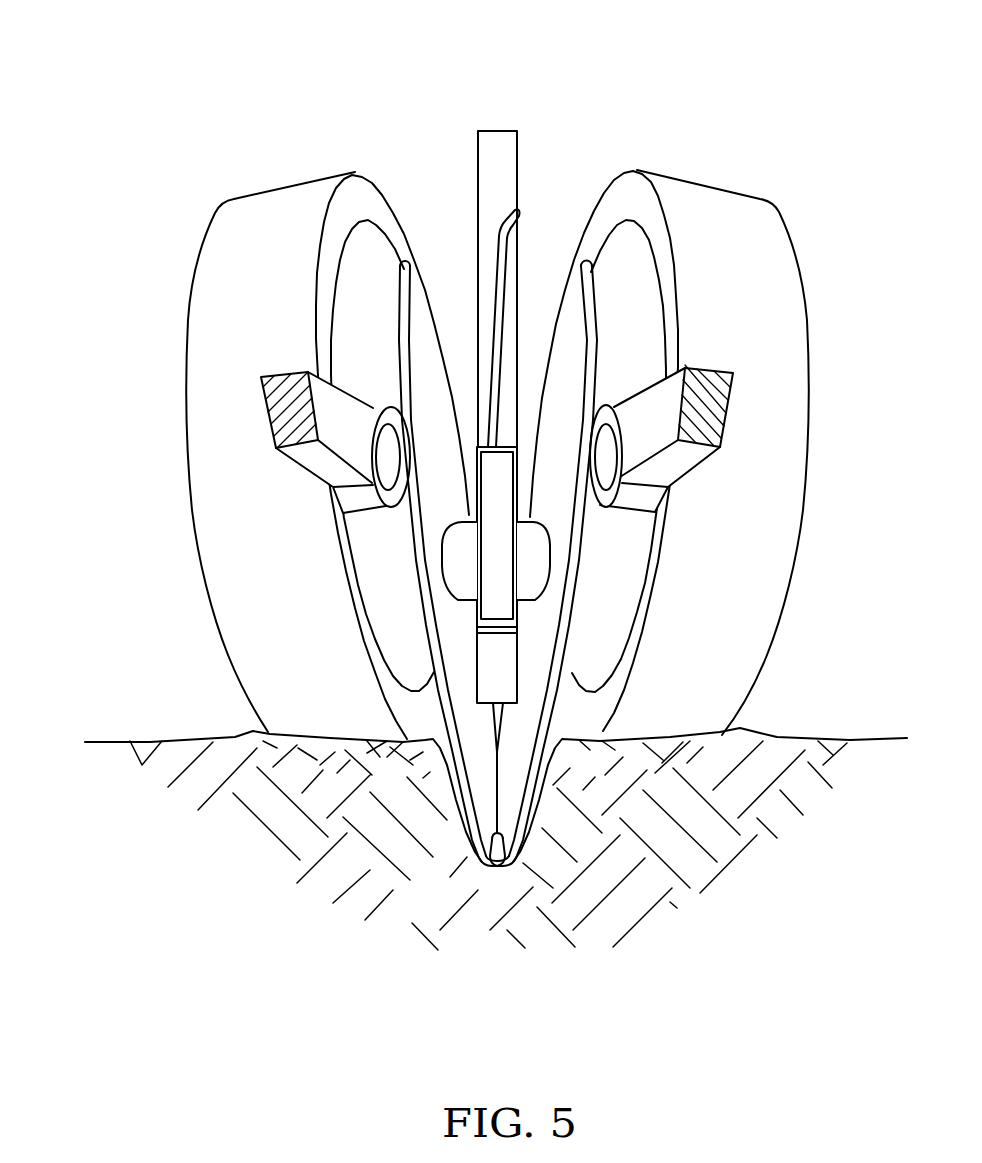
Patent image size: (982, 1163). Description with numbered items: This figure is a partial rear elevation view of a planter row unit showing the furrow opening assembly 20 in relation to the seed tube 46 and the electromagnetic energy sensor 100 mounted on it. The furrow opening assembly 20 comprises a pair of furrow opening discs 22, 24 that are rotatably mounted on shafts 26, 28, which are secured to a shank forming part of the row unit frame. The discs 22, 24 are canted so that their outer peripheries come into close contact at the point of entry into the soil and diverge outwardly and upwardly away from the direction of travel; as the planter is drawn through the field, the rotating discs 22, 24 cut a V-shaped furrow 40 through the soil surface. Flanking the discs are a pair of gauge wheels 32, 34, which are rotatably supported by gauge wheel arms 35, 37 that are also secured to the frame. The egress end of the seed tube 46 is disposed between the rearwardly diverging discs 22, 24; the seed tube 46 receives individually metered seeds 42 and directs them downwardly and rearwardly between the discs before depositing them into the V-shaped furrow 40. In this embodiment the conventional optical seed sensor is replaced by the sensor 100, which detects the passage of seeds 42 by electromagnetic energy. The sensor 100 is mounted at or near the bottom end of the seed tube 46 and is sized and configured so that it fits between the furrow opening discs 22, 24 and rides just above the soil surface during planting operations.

The furrow opening assembly 20 is at (204, 97).
The furrow opening disc 22 is at (427, 310).
The furrow opening disc 24 is at (581, 314).
The shaft 26 is at (455, 565).
The shaft 28 is at (538, 553).
The gauge wheel 32 is at (220, 282).
The gauge wheel 34 is at (790, 283).
The gauge wheel arm 35 is at (302, 457).
The gauge wheel arm 37 is at (687, 458).
The V-shaped furrow 40 is at (462, 826).
The seeds 42 is at (490, 866).
The seed tube 46 is at (497, 130).
The electromagnetic energy sensor 100 is at (577, 742).